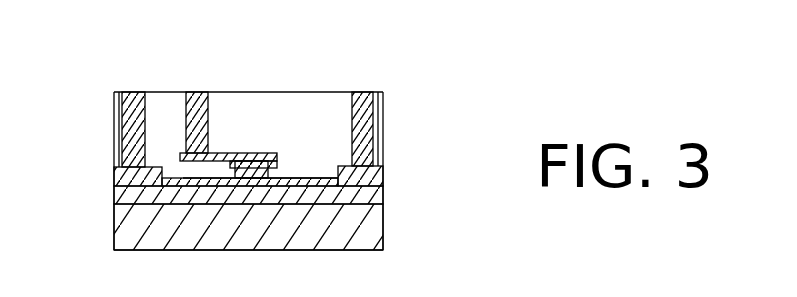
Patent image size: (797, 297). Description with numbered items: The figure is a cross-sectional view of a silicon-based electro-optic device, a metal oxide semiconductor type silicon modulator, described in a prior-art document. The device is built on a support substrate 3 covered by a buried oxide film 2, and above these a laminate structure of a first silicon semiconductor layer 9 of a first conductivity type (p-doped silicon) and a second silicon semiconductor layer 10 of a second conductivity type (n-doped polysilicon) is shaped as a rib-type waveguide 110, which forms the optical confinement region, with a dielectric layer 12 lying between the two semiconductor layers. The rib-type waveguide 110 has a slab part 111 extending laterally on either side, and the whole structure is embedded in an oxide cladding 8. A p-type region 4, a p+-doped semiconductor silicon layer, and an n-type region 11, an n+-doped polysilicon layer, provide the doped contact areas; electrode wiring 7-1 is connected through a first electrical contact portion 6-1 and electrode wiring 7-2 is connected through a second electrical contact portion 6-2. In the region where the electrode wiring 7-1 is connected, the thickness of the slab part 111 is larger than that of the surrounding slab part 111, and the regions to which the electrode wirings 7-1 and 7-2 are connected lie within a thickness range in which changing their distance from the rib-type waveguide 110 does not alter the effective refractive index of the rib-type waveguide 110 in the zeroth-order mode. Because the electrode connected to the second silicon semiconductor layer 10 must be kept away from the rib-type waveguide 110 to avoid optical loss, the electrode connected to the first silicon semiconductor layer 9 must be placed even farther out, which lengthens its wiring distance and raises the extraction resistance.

The buried oxide film 2 is at (375, 192).
The support substrate 3 is at (251, 236).
The p-type region 4 is at (122, 183).
The first electrical contact portion 6-1 is at (123, 165).
The second electrical contact portion 6-2 is at (210, 152).
The electrode wiring 7-1 is at (121, 93).
The electrode wiring 7-2 is at (197, 97).
The oxide cladding 8 is at (167, 98).
The first silicon semiconductor layer 9 is at (296, 178).
The second silicon semiconductor layer 10 is at (257, 153).
The n-type region 11 is at (184, 161).
The dielectric layer 12 is at (236, 164).
The rib-type waveguide 110 is at (246, 176).
The slab part 111 is at (302, 178).